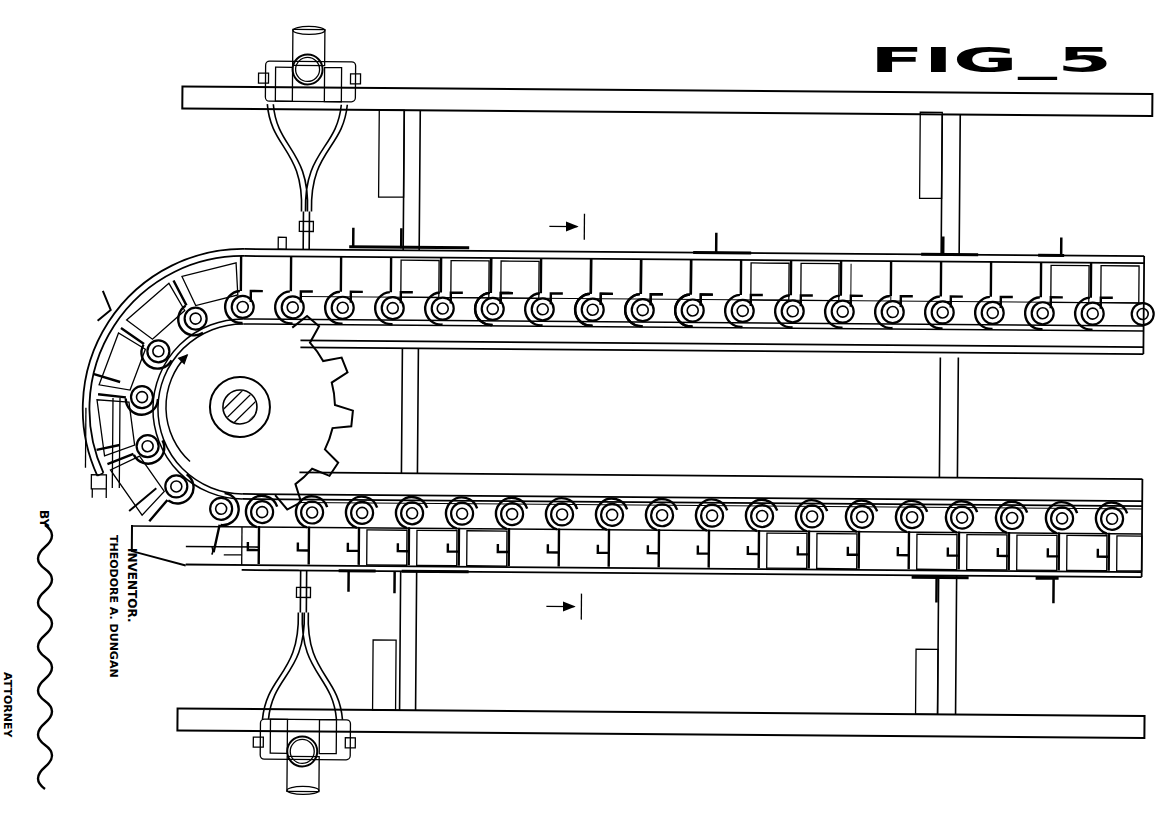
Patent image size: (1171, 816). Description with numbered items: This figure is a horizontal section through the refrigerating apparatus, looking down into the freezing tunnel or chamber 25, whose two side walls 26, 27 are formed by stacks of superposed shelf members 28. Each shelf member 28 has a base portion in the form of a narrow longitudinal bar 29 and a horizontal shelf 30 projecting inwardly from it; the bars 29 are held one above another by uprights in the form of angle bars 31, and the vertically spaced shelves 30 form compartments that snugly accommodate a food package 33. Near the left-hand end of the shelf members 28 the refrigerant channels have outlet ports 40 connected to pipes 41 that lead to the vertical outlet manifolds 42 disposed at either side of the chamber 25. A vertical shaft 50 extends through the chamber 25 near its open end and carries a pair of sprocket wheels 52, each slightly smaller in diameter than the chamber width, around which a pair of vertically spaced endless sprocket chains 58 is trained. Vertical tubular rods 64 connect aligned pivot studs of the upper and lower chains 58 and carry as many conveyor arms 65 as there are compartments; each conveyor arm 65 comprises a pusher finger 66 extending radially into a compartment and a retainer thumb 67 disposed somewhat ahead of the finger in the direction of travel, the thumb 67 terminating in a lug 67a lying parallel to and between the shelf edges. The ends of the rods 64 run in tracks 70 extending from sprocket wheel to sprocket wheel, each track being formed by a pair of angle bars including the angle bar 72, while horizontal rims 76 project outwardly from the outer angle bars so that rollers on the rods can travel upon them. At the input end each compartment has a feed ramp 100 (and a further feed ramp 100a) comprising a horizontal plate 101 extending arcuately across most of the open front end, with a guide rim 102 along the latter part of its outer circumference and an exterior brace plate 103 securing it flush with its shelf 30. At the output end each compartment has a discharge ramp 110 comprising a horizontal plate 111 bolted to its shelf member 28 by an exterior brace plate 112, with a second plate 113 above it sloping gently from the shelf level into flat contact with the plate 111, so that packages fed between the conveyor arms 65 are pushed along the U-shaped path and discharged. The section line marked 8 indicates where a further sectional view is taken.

The section line 8- 8 is at (575, 418).
The freezing tunnel or chamber 25 is at (707, 423).
The side wall 26 is at (821, 248).
The side wall 27 is at (842, 572).
The shelf member 28 is at (869, 273).
The longitudinal strip or bar 29 is at (536, 243).
The horizontal shelf 30 is at (620, 268).
The angle bar 31 is at (400, 238).
The food package 33 is at (458, 272).
The outlet port 40 is at (312, 250).
The pipe 41 is at (338, 130).
The outlet manifold 42 is at (322, 44).
The shaft 50 is at (252, 402).
The sprocket wheel 52 is at (322, 418).
The sprocket chain 58 is at (1122, 318).
The vertical rod 64 is at (528, 302).
The conveyor arm 65 is at (688, 318).
The pusher finger 66 is at (378, 272).
The retainer thumb 67 is at (596, 322).
The lug 67a is at (622, 280).
The track 70 is at (1013, 332).
The angle bar 72 is at (1058, 343).
The horizontal rim 76 is at (128, 512).
The feed ramp 100 is at (96, 412).
The feed ramp 100a is at (80, 400).
The horizontal plate 101 is at (93, 426).
The guide rim 102 is at (97, 323).
The brace plate 103 is at (278, 245).
The discharge ramp 110 is at (213, 548).
The horizontal plate 111 is at (241, 546).
The brace plate 112 is at (278, 570).
The second plate 113 is at (172, 554).